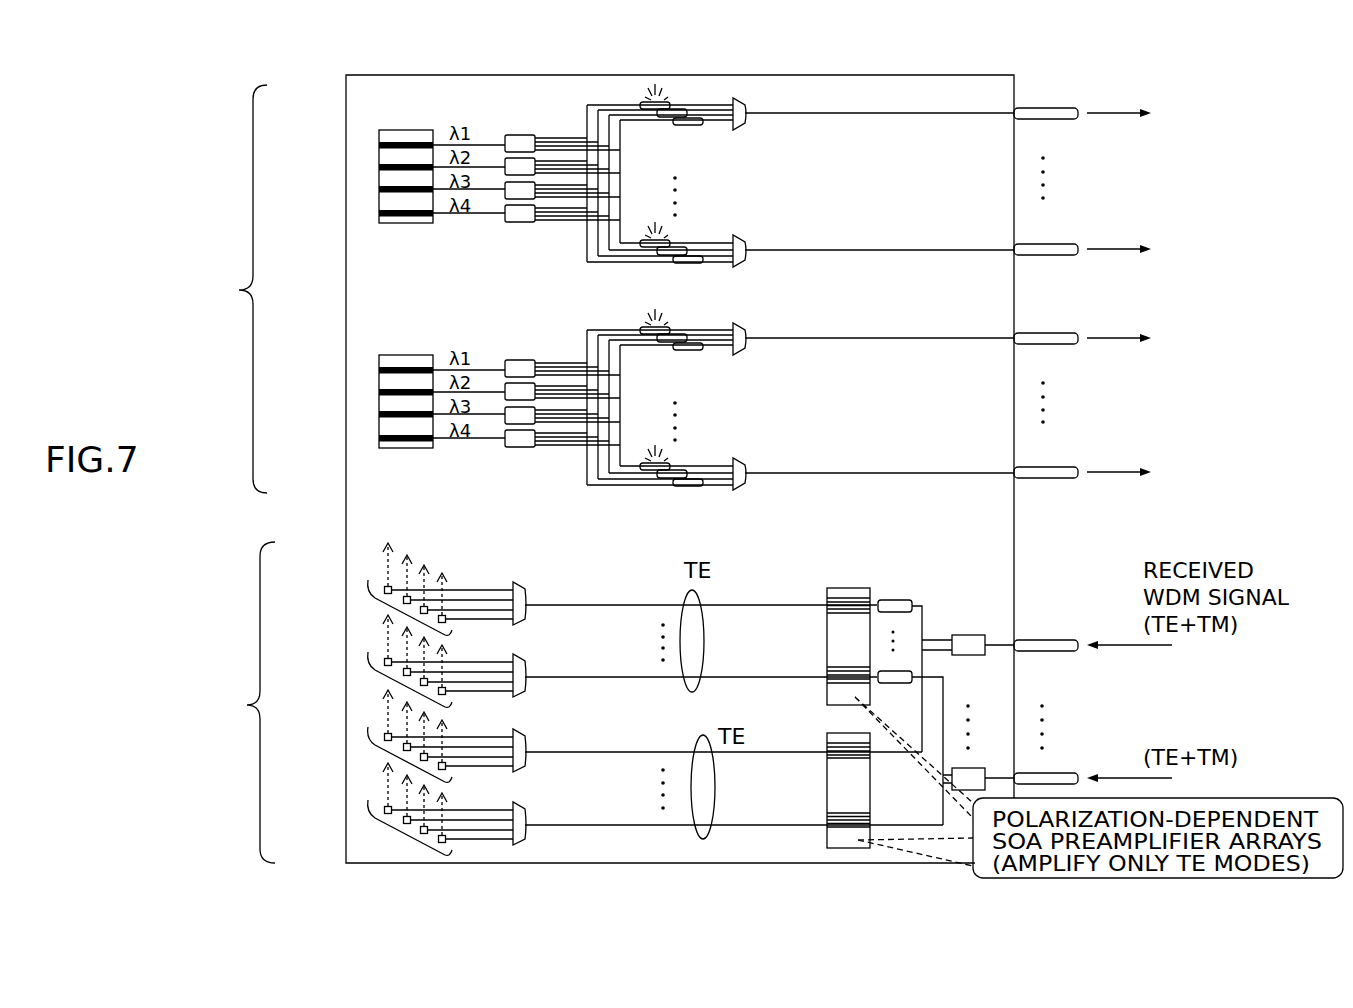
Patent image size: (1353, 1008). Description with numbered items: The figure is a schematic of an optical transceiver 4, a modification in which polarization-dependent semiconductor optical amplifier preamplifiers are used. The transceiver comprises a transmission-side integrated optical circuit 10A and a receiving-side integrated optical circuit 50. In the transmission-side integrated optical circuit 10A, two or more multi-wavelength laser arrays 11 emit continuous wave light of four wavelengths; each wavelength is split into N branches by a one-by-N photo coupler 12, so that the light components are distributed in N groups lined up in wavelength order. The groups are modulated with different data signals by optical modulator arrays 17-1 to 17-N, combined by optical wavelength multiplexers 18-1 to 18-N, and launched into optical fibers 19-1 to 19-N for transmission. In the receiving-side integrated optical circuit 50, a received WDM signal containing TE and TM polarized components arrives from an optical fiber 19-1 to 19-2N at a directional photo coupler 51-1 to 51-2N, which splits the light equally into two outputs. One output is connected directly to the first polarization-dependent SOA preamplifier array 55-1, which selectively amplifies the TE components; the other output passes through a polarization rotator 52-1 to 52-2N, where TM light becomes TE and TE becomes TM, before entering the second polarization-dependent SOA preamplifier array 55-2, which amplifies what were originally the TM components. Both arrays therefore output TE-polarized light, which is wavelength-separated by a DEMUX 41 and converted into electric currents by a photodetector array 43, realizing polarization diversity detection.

The optical transceiver 4 is at (969, 57).
The transmission-side integrated optical circuit 10A is at (224, 289).
The multi-wavelength laser array 11 is at (412, 129).
The 1×N photo coupler 12 is at (540, 131).
The optical modulator array 17-1 is at (712, 130).
The optical modulator array 17-N is at (712, 266).
The optical wavelength multiplexer 18-1 is at (747, 103).
The optical wavelength multiplexer 18-N is at (747, 240).
The optical fiber 19-1 is at (1052, 108).
The optical fiber 19-N is at (1052, 244).
The optical fiber 19-2N is at (1052, 773).
The DEMUX 41 is at (530, 593).
The photodetector array 43 is at (404, 699).
The receiving-side integrated optical circuit 50 is at (243, 702).
The photo coupler 51-1 is at (972, 635).
The photo coupler 51-2N is at (972, 768).
The polarization rotator 52-1 is at (895, 600).
The polarization rotator 52-2N is at (895, 683).
The first polarization-dependent SOA preamplifier array 55-1 is at (827, 799).
The second polarization-dependent SOA preamplifier array 55-2 is at (827, 647).